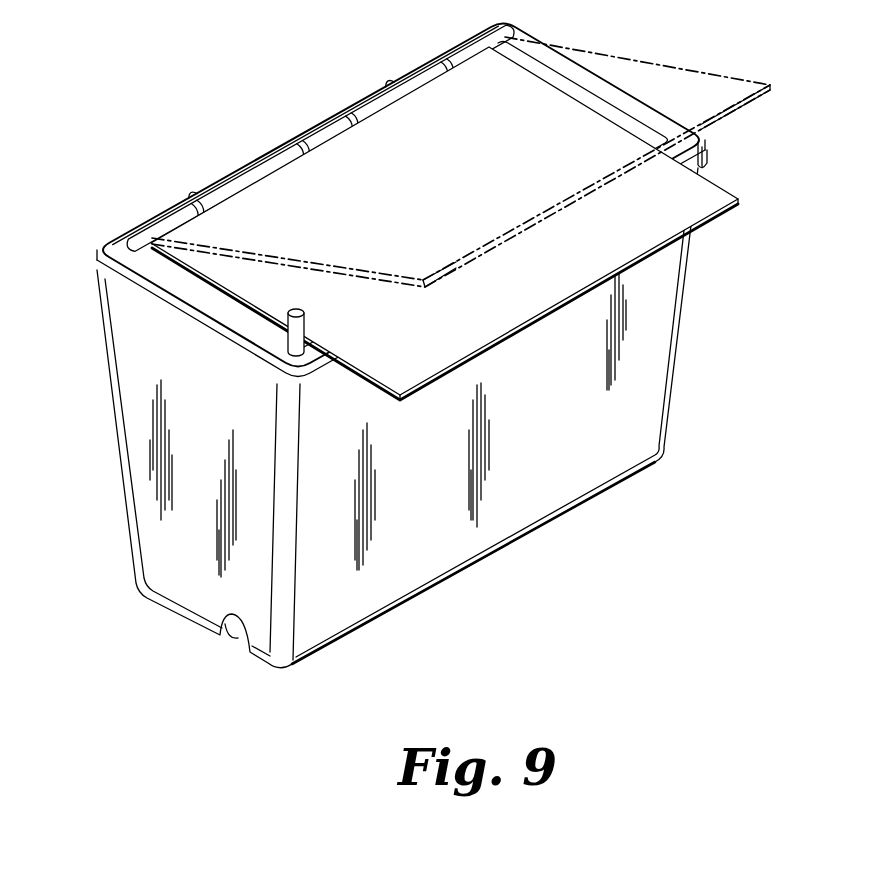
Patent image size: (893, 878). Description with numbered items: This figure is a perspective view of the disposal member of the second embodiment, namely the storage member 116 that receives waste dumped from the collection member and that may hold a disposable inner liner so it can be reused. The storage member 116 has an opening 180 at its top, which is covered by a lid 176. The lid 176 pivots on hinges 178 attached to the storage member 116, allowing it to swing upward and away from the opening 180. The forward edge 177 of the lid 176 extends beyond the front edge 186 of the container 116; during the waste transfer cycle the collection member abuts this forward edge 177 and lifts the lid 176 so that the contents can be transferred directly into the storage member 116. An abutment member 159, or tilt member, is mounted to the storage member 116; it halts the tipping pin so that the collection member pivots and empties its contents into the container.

The storage member 116 is at (640, 425).
The abutment member 159 is at (290, 327).
The lid 176 is at (695, 192).
The forward edge 177 is at (698, 217).
The hinges 178 is at (421, 78).
The opening 180 is at (147, 265).
The front edge 186 is at (707, 168).